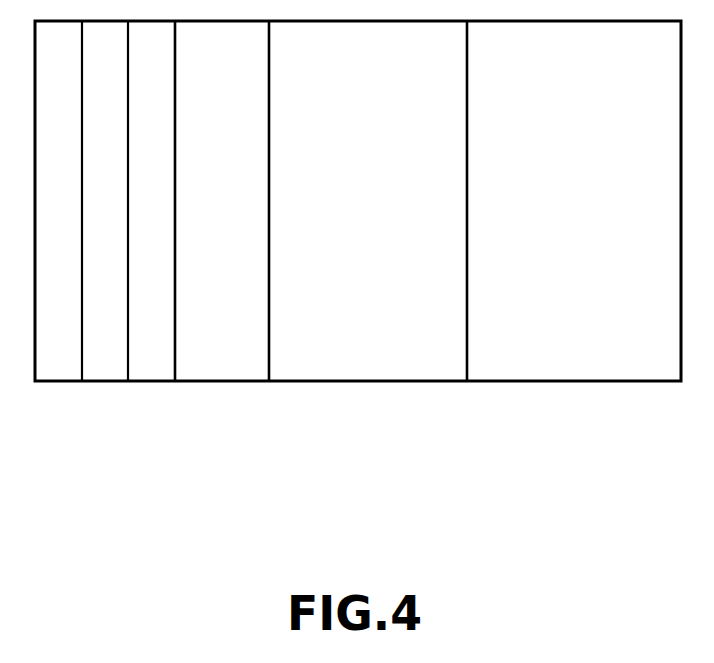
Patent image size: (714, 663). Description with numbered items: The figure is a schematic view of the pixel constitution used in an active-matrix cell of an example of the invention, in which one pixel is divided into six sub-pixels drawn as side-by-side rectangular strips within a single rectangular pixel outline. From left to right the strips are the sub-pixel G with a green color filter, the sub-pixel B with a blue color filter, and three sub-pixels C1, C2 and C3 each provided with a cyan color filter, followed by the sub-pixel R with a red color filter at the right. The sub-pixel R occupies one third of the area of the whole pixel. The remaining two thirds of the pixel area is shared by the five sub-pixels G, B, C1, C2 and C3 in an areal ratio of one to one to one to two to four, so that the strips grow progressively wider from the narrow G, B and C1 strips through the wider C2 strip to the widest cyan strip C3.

The sub-pixel G is at (63, 382).
The sub-pixel B is at (115, 382).
The sub-pixel C1 is at (158, 382).
The sub-pixel C2 is at (233, 372).
The sub-pixel C3 is at (307, 372).
The sub-pixel R is at (580, 382).